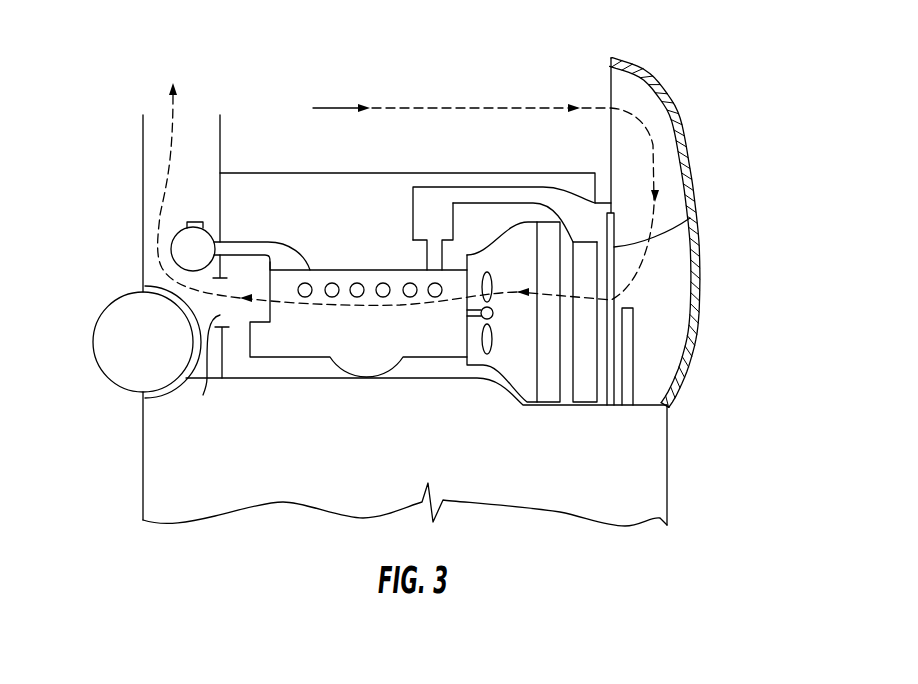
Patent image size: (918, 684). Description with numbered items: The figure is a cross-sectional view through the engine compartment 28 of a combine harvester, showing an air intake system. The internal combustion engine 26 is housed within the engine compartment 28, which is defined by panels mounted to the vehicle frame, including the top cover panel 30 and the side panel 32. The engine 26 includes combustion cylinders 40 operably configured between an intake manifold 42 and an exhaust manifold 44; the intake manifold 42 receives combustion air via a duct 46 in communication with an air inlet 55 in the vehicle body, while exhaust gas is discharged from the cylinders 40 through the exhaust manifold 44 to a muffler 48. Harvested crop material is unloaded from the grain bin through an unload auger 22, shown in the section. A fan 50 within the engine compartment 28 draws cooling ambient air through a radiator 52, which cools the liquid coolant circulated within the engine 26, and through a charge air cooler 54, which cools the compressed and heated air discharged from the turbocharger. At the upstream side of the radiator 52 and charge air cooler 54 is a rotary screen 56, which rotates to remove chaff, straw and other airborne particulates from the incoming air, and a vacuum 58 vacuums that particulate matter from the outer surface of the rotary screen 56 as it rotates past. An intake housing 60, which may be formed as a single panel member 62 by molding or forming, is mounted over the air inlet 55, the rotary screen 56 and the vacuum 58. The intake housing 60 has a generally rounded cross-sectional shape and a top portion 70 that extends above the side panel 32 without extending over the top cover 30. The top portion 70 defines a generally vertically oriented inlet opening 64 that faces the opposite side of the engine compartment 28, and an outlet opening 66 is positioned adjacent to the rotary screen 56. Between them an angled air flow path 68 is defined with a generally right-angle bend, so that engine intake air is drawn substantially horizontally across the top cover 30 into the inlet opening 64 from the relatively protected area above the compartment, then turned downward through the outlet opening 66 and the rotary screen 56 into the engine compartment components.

The unload auger 22 is at (95, 332).
The internal combustion engine 26 is at (367, 250).
The engine compartment 28 is at (683, 40).
The top cover panel 30 is at (343, 172).
The side panel 32 is at (497, 0).
The combustion cylinders 40 is at (357, 298).
The intake manifold 42 is at (437, 198).
The exhaust manifold 44 is at (272, 243).
The duct 46 is at (523, 195).
The muffler 48 is at (180, 252).
The fan 50 is at (482, 381).
The radiator 52 is at (590, 387).
The charge air cooler 54 is at (550, 392).
The air inlet 55 is at (578, 278).
The rotary screen 56 is at (690, 232).
The vacuum 58 is at (627, 398).
The intake housing 60 is at (700, 328).
The single panel member 62 is at (687, 363).
The inlet opening 64 is at (585, 138).
The outlet opening 66 is at (650, 283).
The air flow path 68 is at (655, 145).
The top portion 70 is at (633, 63).